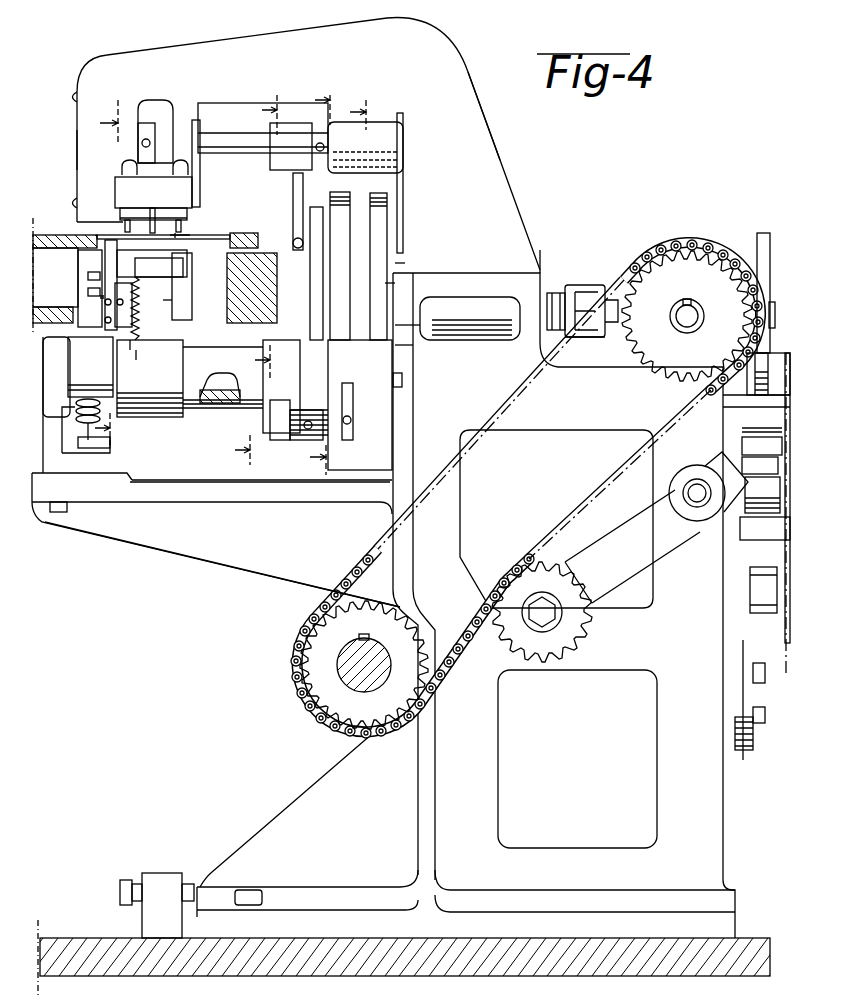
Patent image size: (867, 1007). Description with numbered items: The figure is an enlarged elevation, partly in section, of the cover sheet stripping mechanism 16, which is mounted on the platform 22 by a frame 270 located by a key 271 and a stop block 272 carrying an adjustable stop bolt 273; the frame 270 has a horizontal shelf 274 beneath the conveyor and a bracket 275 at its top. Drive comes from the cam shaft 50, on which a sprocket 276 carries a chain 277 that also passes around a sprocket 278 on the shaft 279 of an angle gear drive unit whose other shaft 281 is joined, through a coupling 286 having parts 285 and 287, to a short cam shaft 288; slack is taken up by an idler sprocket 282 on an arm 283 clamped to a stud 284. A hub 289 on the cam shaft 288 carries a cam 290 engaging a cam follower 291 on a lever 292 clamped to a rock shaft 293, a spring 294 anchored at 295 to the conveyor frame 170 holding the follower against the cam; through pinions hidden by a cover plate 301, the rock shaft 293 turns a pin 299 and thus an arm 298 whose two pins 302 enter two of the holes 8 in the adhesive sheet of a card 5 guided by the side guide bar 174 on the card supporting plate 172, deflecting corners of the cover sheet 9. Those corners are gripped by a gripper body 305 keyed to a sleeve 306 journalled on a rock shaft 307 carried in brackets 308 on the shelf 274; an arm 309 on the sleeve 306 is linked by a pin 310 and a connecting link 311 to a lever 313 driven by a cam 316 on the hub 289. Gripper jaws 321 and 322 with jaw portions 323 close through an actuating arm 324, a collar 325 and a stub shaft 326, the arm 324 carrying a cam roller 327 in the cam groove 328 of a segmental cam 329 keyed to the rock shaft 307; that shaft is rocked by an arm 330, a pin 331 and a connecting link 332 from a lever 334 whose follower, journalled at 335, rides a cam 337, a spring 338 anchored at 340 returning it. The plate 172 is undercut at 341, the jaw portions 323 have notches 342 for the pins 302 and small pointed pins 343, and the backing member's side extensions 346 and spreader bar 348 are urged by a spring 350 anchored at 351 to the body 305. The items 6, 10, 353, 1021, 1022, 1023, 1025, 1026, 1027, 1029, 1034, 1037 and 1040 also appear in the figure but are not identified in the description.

The card 5 is at (77, 235).
The section line 6- 6 is at (114, 272).
The holes 8 is at (272, 237).
The cover sheet 9 is at (289, 278).
The section line 10- 10 is at (348, 287).
The cover sheet stripping mechanism 16 is at (519, 127).
The base plate or platform 22 is at (97, 933).
The cam shaft 50 is at (340, 672).
The conveyor frame 170 is at (262, 325).
The card supporting plate 172 is at (65, 279).
The side guide bar 174 is at (253, 232).
The frame or main bracket 270 is at (541, 274).
The key 271 is at (735, 935).
The stop block 272 is at (153, 877).
The adjustable stop bolt 273 is at (122, 888).
The horizontal shelf 274 is at (135, 493).
The bracket 275 is at (493, 152).
The sprocket 276 is at (392, 622).
The chain 277 is at (293, 643).
The sprocket 278 is at (687, 363).
The shaft 279 is at (688, 322).
The driven shaft 281 is at (771, 310).
The idler sprocket 282 is at (565, 580).
The arm 283 is at (670, 542).
The stud 284 is at (693, 497).
The coupling part 285 is at (600, 290).
The coupling 286 is at (598, 272).
The coupling part 287 is at (578, 340).
The cam shaft 288 is at (421, 312).
The hub 289 is at (380, 353).
The cam 290 is at (385, 333).
The cam follower 291 is at (347, 217).
The lever 292 is at (320, 203).
The rock shaft 293 is at (247, 142).
The coil extension spring 294 is at (405, 267).
The spring connection point 295 is at (395, 283).
The arm 298 is at (187, 182).
The transverse pin 299 is at (195, 192).
The cover plate 301 is at (75, 150).
The pins 302 is at (123, 218).
The gripper body 305 is at (141, 415).
The sleeve 306 is at (223, 403).
The rock shaft 307 is at (207, 400).
The brackets 308 is at (392, 420).
The vertical arm 309 is at (263, 377).
The pin 310 is at (290, 425).
The connecting link 311 is at (290, 481).
The lever 313 is at (300, 192).
The cam 316 is at (355, 207).
The gripper jaw 321 is at (110, 260).
The gripper jaw 322 is at (187, 277).
The jaw portions 323 is at (128, 230).
The actuating arm 324 is at (120, 312).
The collar 325 is at (180, 303).
The stub shaft 326 is at (102, 300).
The cam roller 327 is at (92, 275).
The cam groove 328 is at (88, 295).
The segmental cam 329 is at (87, 358).
The vertical arm 330 is at (403, 380).
The pin 331 is at (355, 430).
The connecting link 332 is at (347, 440).
The lever 334 is at (392, 208).
The follower journal 335 is at (403, 252).
The cam 337 is at (380, 228).
The coil extension spring 338 is at (75, 408).
The spring connection point 340 is at (100, 445).
The undercut 341 is at (193, 257).
The notches 342 is at (182, 235).
The pointed pins 343 is at (168, 233).
The side extensions 346 is at (182, 305).
The spreader bar 348 is at (177, 263).
The coil extension spring 350 is at (136, 312).
The spring connection point 351 is at (136, 330).
The pin 353 is at (153, 233).
The bracket 1021 is at (752, 430).
The plate 1022 is at (773, 415).
The block 1023 is at (787, 458).
The eccentric 1025 is at (693, 467).
The rod 1026 is at (763, 365).
The plate 1027 is at (760, 232).
The threaded member 1029 is at (747, 727).
The block 1034 is at (785, 485).
The block 1037 is at (777, 518).
The bolt 1040 is at (753, 568).